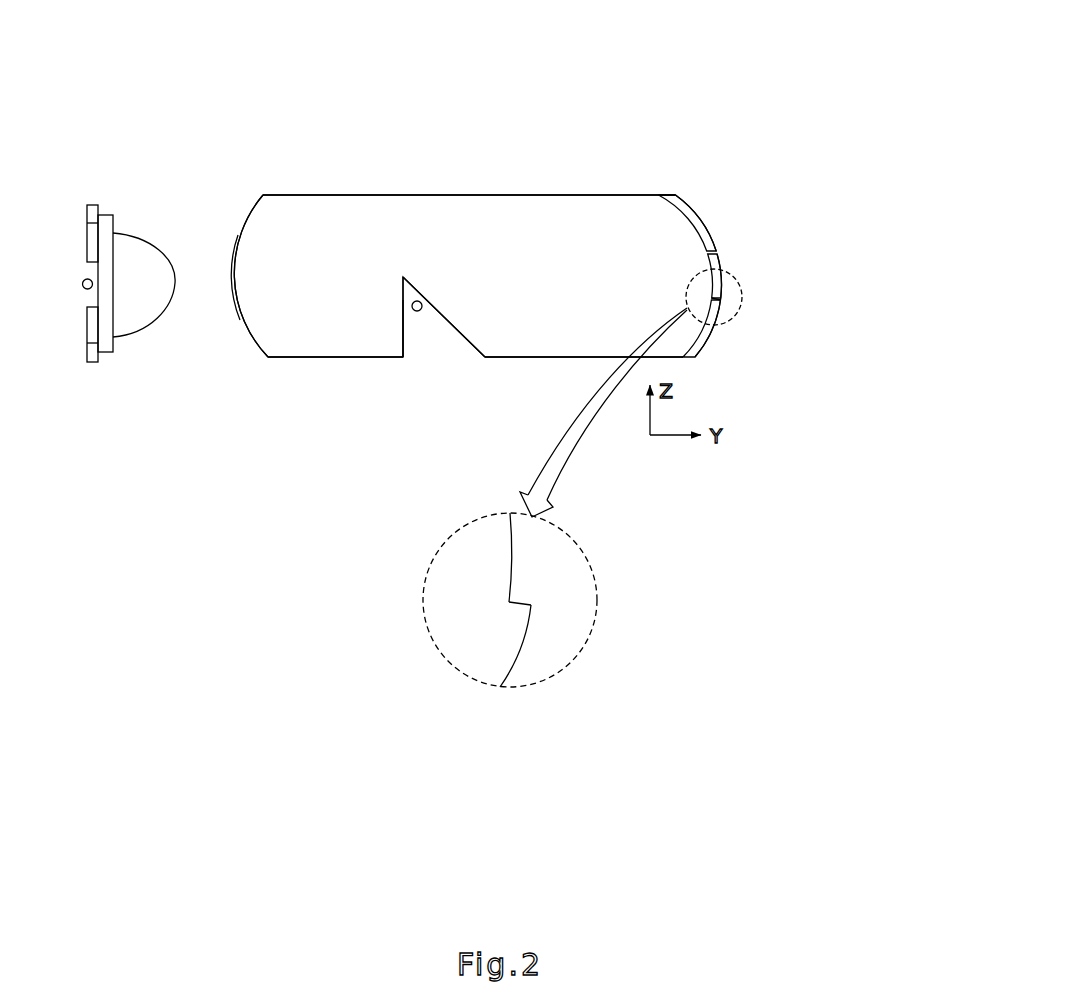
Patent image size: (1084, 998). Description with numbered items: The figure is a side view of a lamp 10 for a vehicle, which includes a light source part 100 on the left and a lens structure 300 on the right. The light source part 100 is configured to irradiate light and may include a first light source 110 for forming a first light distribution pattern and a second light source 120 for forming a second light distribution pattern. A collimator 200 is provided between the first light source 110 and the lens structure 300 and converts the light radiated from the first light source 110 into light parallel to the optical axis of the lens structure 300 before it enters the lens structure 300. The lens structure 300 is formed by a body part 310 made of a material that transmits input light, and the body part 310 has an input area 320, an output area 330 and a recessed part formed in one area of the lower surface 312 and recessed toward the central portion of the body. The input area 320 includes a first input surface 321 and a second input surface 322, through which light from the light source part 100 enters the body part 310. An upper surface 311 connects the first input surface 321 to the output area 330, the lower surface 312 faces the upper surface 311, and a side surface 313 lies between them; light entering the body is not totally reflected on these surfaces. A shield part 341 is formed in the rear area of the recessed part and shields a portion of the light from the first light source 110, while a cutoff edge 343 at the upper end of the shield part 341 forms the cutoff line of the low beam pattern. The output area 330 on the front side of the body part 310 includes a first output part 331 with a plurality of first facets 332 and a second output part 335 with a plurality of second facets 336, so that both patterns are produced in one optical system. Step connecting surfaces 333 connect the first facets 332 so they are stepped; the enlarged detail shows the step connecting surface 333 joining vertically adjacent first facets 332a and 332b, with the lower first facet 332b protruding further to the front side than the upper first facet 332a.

The lamp 10 is at (278, 73).
The light source part 100 is at (60, 341).
The first light source 110 is at (83, 290).
The second light source 120 is at (420, 312).
The collimator 200 is at (140, 238).
The lens structure 300 is at (505, 66).
The body part 310 is at (487, 135).
The upper surface 311 is at (480, 195).
The lower surface 312 is at (360, 357).
The side surface 313 is at (545, 212).
The input area 320 is at (193, 355).
The first input surface 321 is at (235, 298).
The second input surface 322 is at (467, 343).
The output area 330 is at (903, 172).
The first output part 331 is at (867, 266).
The first facets 332 is at (827, 267).
The first facet 332a is at (718, 275).
The first facet 332b is at (721, 317).
The step connecting surface 333 is at (520, 603).
The second output part 335 is at (819, 199).
The second facets 336 is at (702, 222).
The shield part 341 is at (403, 330).
The cutoff edge 343 is at (402, 277).